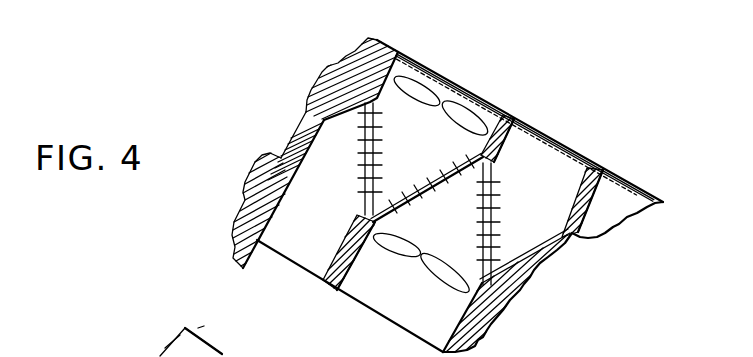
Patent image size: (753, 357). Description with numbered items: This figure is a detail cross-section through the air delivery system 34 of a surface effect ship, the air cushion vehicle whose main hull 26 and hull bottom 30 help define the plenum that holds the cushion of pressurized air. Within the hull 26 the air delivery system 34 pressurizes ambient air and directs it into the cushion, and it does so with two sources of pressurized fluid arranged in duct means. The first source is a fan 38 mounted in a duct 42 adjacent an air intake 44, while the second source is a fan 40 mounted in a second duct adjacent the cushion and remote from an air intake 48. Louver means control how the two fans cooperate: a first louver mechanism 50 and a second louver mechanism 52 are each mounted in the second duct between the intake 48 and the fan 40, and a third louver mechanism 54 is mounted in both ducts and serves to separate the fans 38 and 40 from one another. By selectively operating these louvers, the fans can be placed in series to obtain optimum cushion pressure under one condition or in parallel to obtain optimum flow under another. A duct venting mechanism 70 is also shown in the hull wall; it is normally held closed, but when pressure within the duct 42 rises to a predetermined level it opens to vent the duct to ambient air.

The main hull 26 is at (246, 190).
The bottom of the hull 30 is at (387, 319).
The air delivery system 34 is at (392, 117).
The fan 38 is at (419, 92).
The fan 40 is at (400, 252).
The duct 42 is at (273, 212).
The air intake 44 is at (480, 99).
The air intake 48 is at (540, 172).
The first louver mechanism 50 is at (358, 152).
The second louver mechanism 52 is at (497, 231).
The third louver mechanism 54 is at (433, 197).
The duct venting mechanism 70 is at (293, 134).